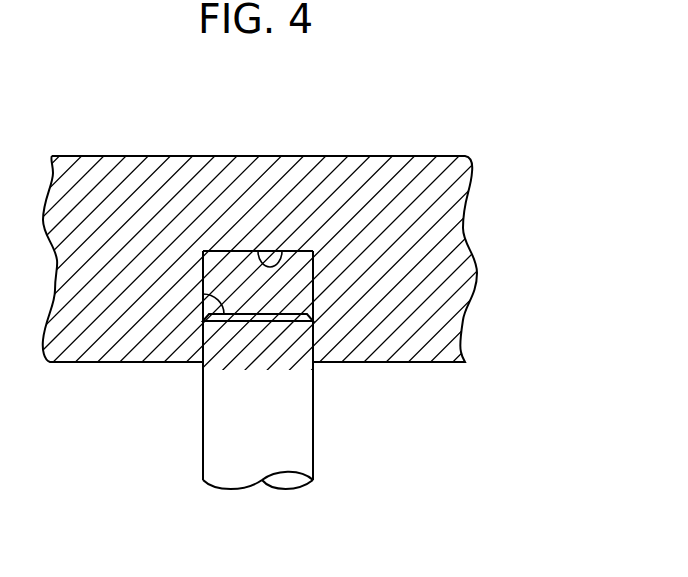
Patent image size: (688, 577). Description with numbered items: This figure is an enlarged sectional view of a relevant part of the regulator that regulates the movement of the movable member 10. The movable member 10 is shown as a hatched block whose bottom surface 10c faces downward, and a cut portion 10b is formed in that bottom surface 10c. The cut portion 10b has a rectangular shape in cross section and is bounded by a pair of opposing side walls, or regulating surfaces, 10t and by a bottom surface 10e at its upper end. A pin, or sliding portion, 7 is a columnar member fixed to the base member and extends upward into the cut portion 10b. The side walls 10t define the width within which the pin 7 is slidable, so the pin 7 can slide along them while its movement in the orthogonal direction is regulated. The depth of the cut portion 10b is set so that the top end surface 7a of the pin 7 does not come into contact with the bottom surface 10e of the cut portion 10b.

The movable member 10 is at (415, 187).
The cut portion 10b is at (205, 278).
The bottom surface of the cut portion 10e is at (279, 253).
The bottom surface 10c is at (112, 363).
The side walls (regulating surfaces) 10t is at (313, 288).
The pin (sliding portion) 7 is at (297, 423).
The top end surface 7a is at (281, 314).